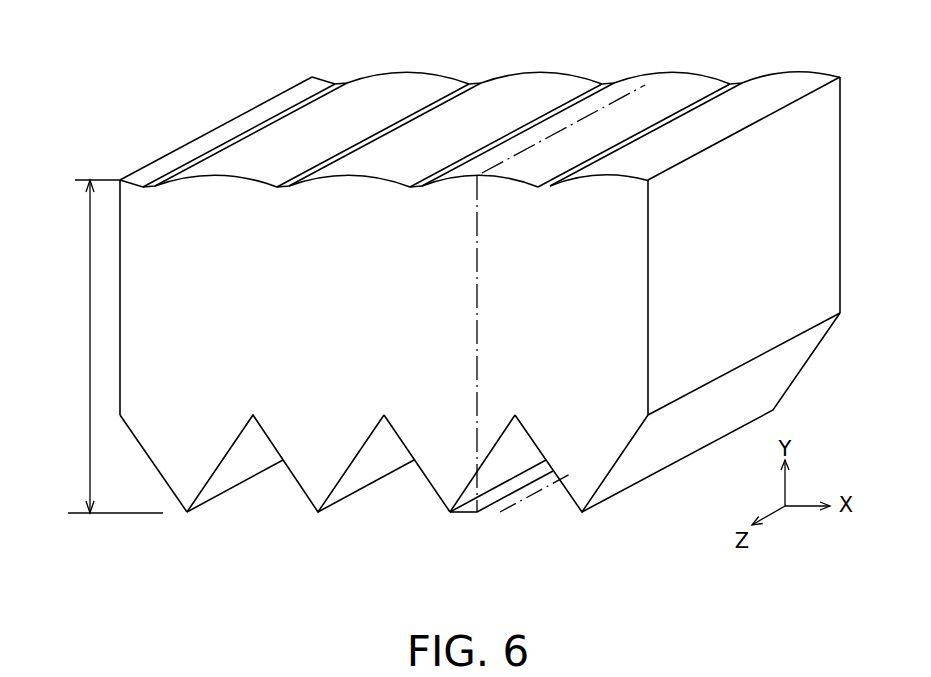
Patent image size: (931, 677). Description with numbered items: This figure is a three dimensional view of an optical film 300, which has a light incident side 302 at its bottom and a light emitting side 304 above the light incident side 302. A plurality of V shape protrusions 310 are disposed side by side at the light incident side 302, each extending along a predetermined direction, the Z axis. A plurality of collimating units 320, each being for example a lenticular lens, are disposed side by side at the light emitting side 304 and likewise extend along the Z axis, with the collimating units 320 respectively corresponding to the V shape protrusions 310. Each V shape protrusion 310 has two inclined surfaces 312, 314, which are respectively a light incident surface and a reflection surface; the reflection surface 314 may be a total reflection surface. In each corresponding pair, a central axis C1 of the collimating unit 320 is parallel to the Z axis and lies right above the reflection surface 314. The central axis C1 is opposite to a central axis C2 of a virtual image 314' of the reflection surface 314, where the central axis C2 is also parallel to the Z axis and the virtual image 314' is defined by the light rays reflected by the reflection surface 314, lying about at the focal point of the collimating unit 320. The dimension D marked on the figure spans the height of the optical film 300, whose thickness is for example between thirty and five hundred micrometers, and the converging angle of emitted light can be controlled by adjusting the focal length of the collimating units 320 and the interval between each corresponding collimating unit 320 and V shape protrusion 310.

The optical film 300 is at (704, 563).
The light incident side 302 is at (142, 470).
The light emitting side 304 is at (192, 106).
The V shape protrusions 310 is at (305, 478).
The inclined surface (light incident surface) 312 is at (432, 489).
The reflection surface 314 is at (489, 495).
The virtual image of the reflection surface 314' is at (496, 538).
The collimating units 320 is at (462, 176).
The central axis of collimating unit C1 is at (642, 85).
The central axis of virtual image C2 is at (537, 485).
The thickness D is at (114, 346).